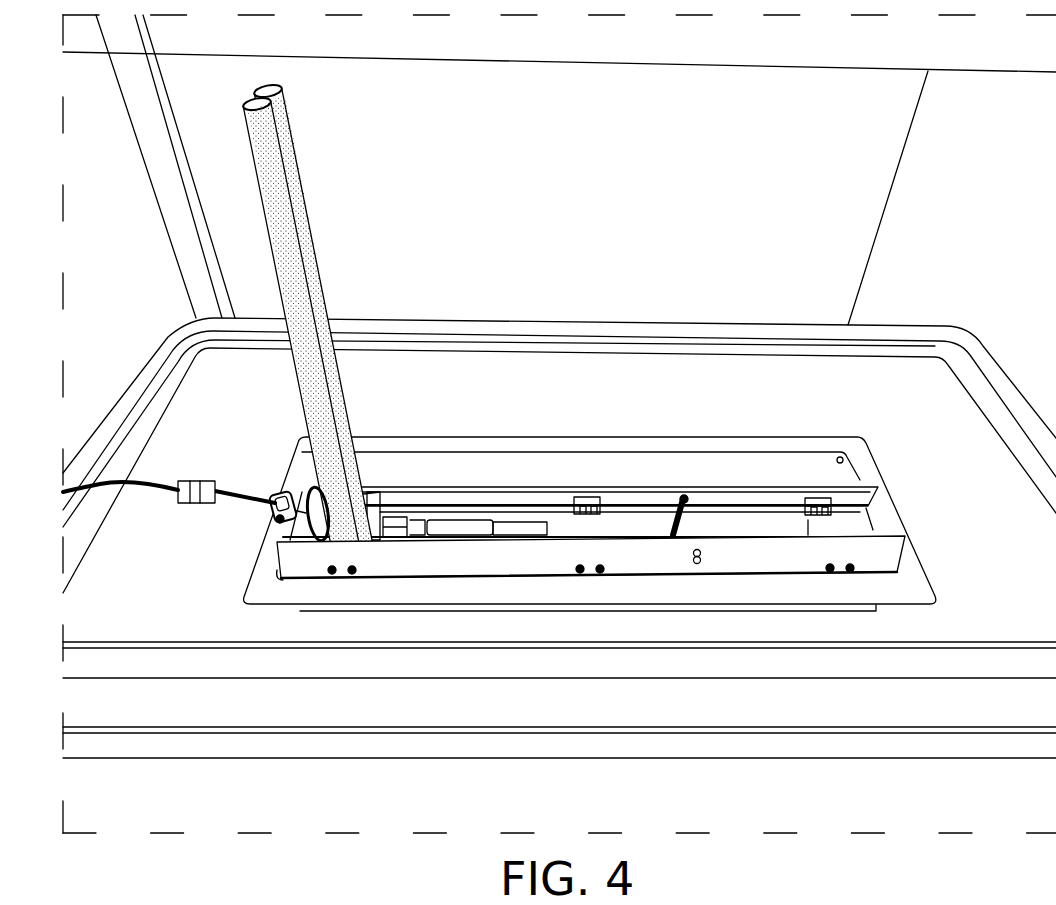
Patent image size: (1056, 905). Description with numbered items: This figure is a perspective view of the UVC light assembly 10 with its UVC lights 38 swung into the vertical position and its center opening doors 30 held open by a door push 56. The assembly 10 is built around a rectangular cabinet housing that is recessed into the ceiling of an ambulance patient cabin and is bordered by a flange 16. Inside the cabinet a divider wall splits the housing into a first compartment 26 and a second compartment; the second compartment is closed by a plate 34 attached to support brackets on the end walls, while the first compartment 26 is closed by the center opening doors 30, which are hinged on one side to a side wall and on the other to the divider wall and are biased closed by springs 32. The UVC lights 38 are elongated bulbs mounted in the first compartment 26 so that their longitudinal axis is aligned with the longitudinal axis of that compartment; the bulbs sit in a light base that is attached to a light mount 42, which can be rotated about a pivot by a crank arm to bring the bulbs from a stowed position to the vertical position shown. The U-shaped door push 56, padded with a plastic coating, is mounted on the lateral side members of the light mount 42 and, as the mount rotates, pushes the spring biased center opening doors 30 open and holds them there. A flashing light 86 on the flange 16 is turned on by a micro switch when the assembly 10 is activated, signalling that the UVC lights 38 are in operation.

The UVC light assembly 10 is at (770, 422).
The flange 16 is at (883, 477).
The first compartment 26 is at (893, 510).
The center opening doors 30 is at (862, 554).
The springs 32 is at (675, 500).
The plate 34 is at (555, 470).
The UVC lights 38 is at (312, 245).
The light mount 42 is at (380, 490).
The door push 56 is at (303, 485).
The flashing light 86 is at (273, 517).